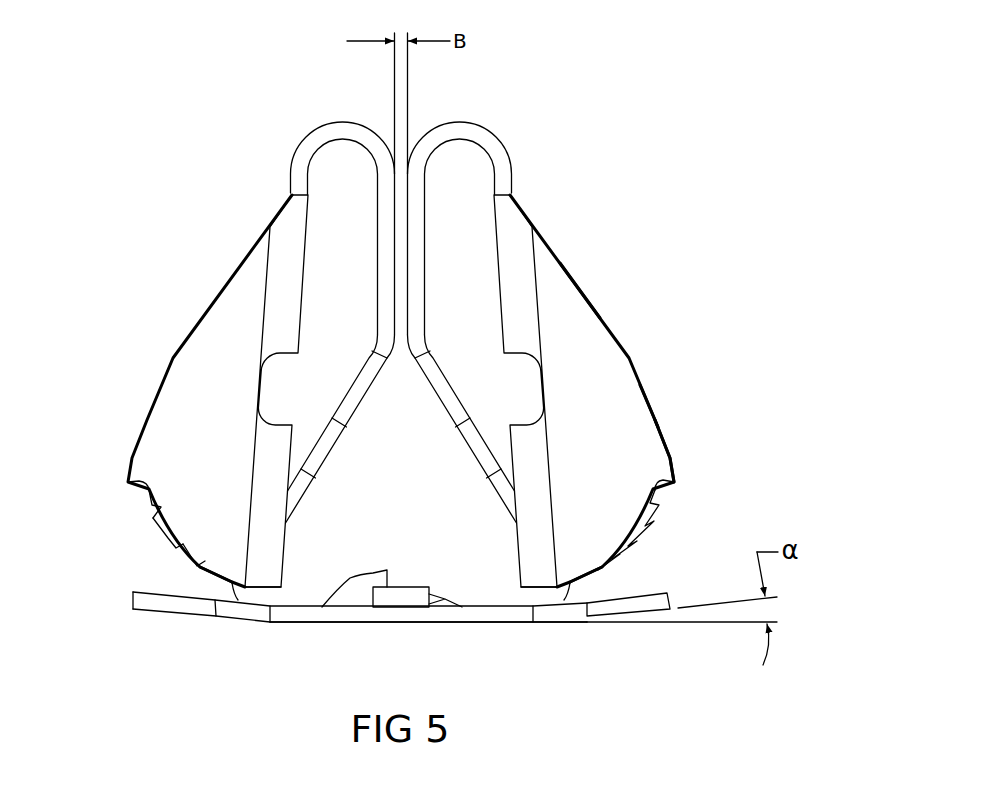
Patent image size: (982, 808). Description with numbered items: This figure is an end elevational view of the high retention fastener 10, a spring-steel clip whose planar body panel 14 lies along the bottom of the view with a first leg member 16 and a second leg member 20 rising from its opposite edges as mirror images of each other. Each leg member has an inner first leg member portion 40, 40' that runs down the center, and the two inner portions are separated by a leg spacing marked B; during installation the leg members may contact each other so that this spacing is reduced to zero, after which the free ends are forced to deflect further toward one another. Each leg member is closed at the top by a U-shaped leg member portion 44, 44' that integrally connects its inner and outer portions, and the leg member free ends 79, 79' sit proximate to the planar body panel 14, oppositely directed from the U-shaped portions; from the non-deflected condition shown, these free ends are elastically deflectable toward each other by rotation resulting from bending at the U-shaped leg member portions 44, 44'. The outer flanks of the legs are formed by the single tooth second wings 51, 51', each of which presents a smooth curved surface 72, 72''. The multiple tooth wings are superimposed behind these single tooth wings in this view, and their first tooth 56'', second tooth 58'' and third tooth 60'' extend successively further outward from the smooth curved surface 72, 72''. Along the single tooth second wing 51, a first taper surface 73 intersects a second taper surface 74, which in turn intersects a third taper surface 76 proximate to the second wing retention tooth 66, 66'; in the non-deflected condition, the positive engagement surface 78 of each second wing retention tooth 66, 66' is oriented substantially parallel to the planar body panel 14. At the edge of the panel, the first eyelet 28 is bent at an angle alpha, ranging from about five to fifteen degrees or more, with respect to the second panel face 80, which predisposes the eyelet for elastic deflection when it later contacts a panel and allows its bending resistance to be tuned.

The high retention fastener 10 is at (658, 165).
The planar body panel 14 is at (300, 615).
The first leg member 16 is at (497, 164).
The second leg member 20 is at (310, 166).
The first eyelet 28 is at (652, 600).
The first leg member portion 40 is at (462, 388).
The first leg member portion 40' is at (340, 386).
The U-shaped leg member portion 44 is at (465, 204).
The U-shaped leg member portion 44' is at (339, 210).
The single tooth second wing 51 is at (592, 397).
The single tooth second wing 51' is at (187, 397).
The first tooth 56'' is at (164, 566).
The second tooth 58'' is at (153, 539).
The third tooth 60'' is at (116, 512).
The second wing retention tooth 66 is at (692, 488).
The second wing retention tooth 66' is at (103, 490).
The smooth curved surface 72 is at (611, 617).
The smooth curved surface 72'' is at (190, 617).
The first taper surface 73 is at (586, 298).
The second taper surface 74 is at (653, 410).
The third taper surface 76 is at (678, 471).
The positive engagement surface 78 is at (664, 498).
The leg member free end 79 is at (559, 611).
The leg member free end 79' is at (244, 608).
The second panel face 80 is at (408, 626).